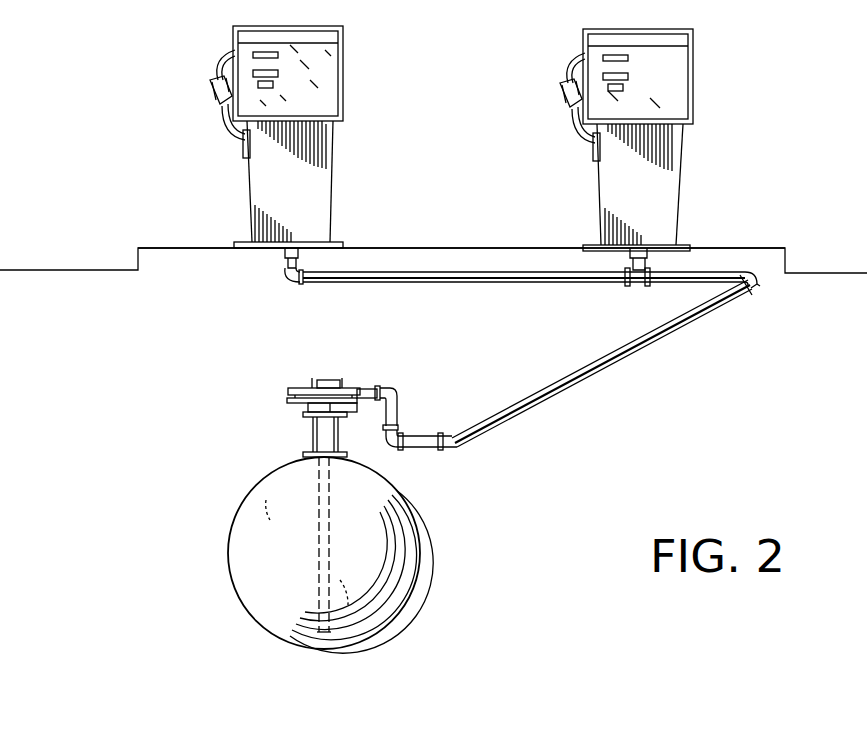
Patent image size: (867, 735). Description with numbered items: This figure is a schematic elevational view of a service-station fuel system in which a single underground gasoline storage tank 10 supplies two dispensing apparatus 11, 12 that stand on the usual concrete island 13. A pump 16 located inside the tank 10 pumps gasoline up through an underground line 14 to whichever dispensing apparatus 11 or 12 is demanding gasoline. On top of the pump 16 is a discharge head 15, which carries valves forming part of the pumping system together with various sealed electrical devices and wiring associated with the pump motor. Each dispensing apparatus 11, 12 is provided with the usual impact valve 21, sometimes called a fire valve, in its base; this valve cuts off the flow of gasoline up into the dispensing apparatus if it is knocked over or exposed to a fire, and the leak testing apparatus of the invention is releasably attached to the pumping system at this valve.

The underground gasoline storage tank 10 is at (418, 549).
The dispensing apparatus 11 is at (677, 180).
The dispensing apparatus 12 is at (331, 178).
The concrete island 13 is at (442, 250).
The underground line 14 is at (519, 283).
The discharge head 15 is at (270, 342).
The pump 16 is at (318, 538).
The impact valve 21 is at (286, 262).